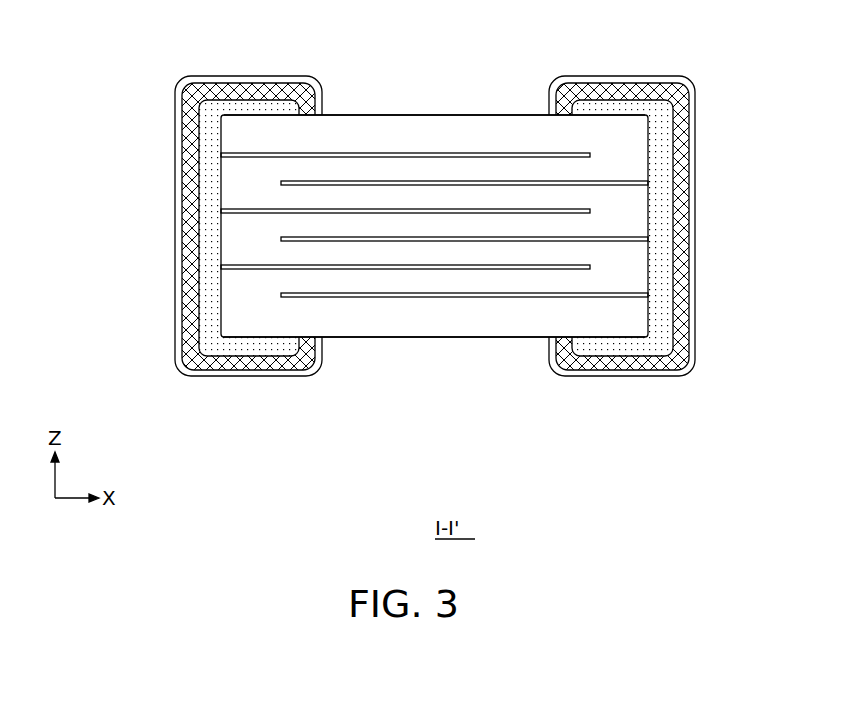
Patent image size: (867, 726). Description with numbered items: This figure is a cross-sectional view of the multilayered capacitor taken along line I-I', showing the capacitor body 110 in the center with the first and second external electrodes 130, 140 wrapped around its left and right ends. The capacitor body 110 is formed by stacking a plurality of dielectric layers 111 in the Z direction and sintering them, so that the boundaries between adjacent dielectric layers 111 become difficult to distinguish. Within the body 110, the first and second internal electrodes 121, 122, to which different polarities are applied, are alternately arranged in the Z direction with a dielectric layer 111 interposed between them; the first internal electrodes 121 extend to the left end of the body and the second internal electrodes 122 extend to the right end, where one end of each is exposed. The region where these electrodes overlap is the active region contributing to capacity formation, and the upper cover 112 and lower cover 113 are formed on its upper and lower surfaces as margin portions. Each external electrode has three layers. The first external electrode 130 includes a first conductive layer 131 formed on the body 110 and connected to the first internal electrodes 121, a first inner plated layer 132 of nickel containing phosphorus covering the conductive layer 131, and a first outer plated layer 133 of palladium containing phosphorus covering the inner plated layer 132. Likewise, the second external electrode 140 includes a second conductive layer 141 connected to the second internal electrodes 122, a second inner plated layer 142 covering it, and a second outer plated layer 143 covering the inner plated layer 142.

The capacitor body 110 is at (337, 88).
The dielectric layer 111 is at (627, 172).
The upper cover 112 is at (398, 137).
The lower cover 113 is at (446, 320).
The first internal electrode 121 is at (460, 153).
The second internal electrode 122 is at (521, 181).
The first external electrode 130 is at (342, 448).
The first conductive layer 131 is at (223, 347).
The first inner plated layer 132 is at (252, 374).
The first outer plated layer 133 is at (292, 376).
The second external electrode 140 is at (540, 448).
The second conductive layer 141 is at (598, 347).
The second inner plated layer 142 is at (626, 376).
The second outer plated layer 143 is at (667, 376).